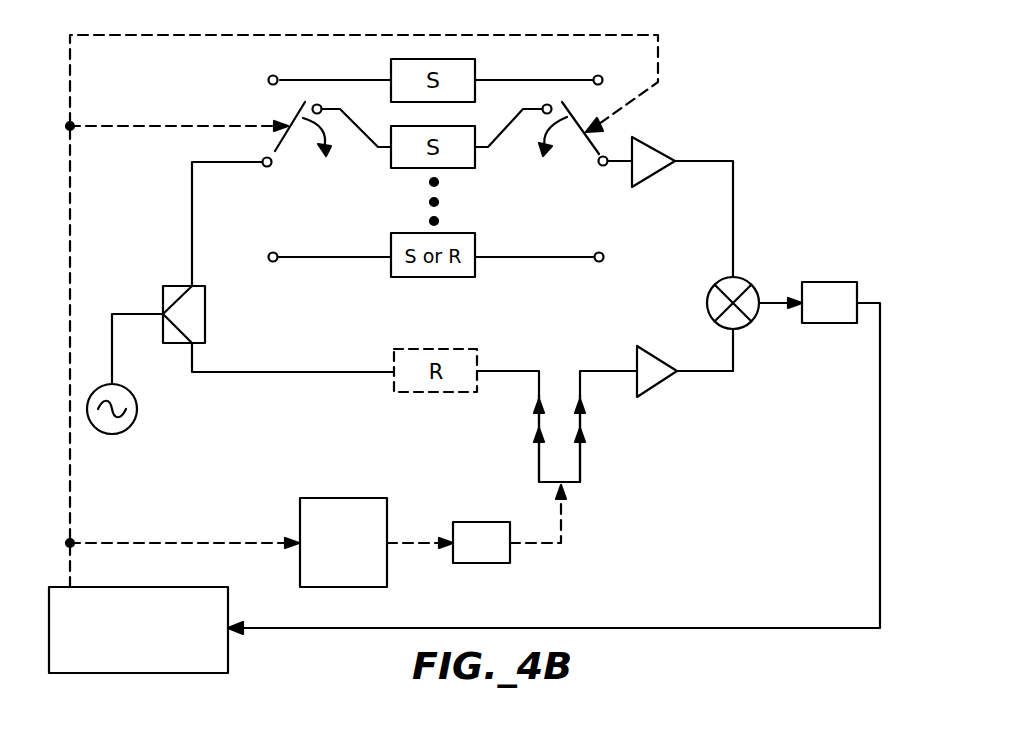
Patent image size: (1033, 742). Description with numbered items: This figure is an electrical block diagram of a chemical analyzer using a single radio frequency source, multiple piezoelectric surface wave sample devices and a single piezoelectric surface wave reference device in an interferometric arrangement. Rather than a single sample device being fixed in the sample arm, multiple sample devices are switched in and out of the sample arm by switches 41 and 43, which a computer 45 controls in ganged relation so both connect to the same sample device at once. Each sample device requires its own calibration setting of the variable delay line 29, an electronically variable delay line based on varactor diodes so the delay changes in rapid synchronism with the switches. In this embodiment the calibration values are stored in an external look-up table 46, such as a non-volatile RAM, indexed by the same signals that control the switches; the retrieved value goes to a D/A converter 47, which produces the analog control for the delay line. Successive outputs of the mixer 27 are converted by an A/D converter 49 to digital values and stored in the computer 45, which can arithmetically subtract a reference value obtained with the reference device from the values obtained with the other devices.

The mixer 27 is at (742, 278).
The variable delay line 29 is at (590, 424).
The switch 41 is at (282, 150).
The switch 43 is at (592, 151).
The computer 45 is at (228, 607).
The look-up table 46 is at (330, 498).
The D/A converter 47 is at (486, 522).
The A/D converter 49 is at (821, 323).